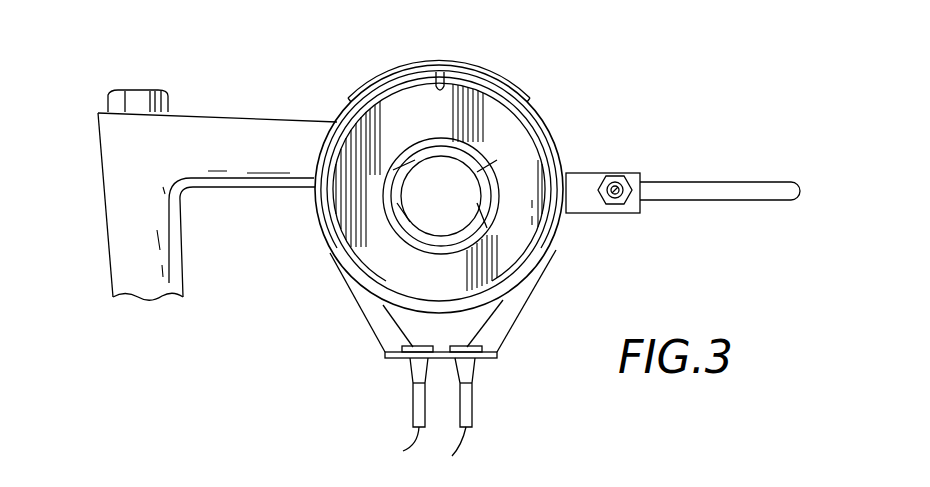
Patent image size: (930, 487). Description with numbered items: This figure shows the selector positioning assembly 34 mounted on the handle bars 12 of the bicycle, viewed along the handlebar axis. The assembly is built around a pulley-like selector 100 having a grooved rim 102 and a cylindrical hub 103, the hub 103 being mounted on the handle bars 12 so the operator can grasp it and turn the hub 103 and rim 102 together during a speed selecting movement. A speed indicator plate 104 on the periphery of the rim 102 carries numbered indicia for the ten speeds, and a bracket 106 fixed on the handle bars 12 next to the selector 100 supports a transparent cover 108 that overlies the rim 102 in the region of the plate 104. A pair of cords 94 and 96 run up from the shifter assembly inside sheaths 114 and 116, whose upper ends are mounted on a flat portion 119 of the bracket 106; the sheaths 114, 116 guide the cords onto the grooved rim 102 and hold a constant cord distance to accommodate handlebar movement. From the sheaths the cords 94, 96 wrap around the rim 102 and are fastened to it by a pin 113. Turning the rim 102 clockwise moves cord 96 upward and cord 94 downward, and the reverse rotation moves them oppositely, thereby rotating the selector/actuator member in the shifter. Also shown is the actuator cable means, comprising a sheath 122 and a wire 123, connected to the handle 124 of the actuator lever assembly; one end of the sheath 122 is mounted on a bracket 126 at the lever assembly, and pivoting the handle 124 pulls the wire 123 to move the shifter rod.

The handle bars 12 is at (481, 178).
The selector positioning assembly 34 is at (304, 233).
The cord 94 is at (503, 300).
The cord 96 is at (383, 305).
The pulley-like selector 100 is at (548, 131).
The grooved rim 102 is at (547, 154).
The cylindrical hub 103 is at (436, 138).
The speed indicator plate 104 is at (536, 113).
The bracket 106 is at (512, 316).
The transparent cover 108 is at (514, 80).
The pin 113 is at (452, 72).
The sheath 114 is at (468, 413).
The sheath 116 is at (415, 397).
The flat portion of bracket 119 is at (498, 357).
The sheath 122 is at (626, 199).
The wire 123 is at (616, 186).
The handle 124 is at (777, 185).
The bracket 126 is at (588, 204).